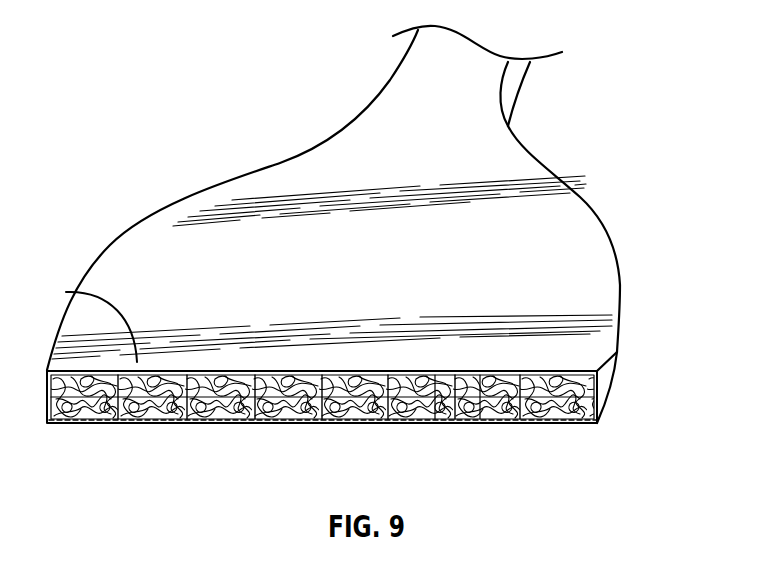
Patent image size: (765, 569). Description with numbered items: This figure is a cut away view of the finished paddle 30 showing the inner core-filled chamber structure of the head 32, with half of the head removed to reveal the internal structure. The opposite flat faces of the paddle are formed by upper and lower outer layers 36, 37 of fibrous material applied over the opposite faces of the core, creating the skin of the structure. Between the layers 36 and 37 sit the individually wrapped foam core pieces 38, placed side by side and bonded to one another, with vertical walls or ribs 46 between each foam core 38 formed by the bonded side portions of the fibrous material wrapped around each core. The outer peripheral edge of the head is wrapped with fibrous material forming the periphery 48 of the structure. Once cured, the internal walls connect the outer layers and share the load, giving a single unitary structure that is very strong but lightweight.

The paddle 30 is at (651, 57).
The head 32 is at (585, 256).
The outer layer 36 is at (87, 320).
The outer layer 37 is at (315, 423).
The foam core piece 38 is at (478, 423).
The vertical walls or ribs 46 is at (181, 401).
The periphery 48 is at (607, 368).